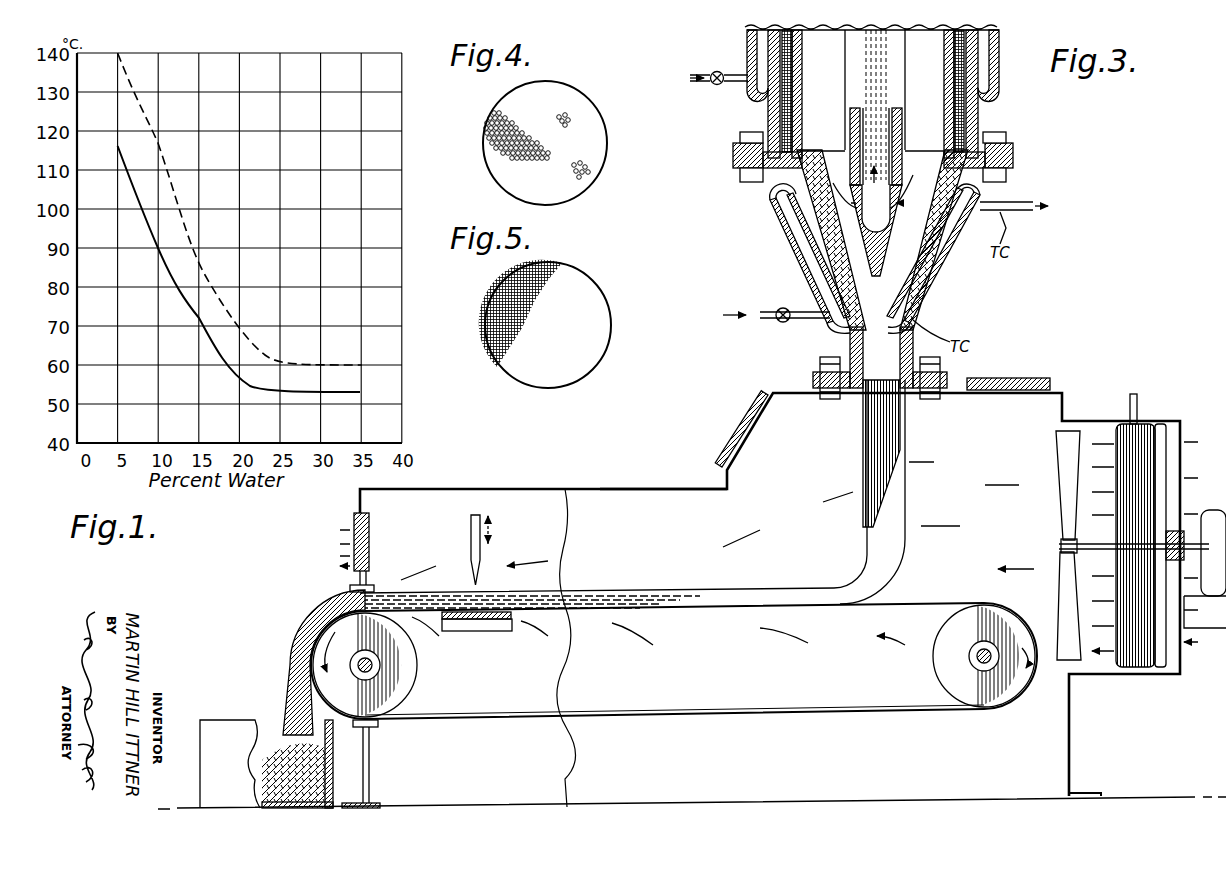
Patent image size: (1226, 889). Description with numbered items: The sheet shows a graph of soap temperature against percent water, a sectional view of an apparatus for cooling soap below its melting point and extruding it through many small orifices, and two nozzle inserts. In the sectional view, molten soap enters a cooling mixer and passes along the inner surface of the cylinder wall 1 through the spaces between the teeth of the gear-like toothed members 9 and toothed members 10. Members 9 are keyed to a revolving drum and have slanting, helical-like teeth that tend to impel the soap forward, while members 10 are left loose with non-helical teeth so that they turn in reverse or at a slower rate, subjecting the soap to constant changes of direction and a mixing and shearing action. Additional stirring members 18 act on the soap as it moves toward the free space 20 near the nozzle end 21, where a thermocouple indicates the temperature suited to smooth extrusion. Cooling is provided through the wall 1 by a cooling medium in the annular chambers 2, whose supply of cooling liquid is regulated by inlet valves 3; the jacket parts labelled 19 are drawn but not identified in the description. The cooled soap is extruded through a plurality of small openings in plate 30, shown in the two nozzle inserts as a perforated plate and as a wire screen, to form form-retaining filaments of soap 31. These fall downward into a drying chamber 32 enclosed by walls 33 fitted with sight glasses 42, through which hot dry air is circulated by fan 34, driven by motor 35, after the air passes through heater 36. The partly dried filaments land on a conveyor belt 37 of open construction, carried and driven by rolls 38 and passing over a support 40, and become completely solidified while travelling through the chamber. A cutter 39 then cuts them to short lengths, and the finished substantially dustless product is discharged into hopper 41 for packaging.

In FIG. 3, the cylinder wall 1 is at (768, 112).
In FIG. 3, the annular chambers 2 is at (762, 88).
In FIG. 3, the inlet valves 3 is at (717, 71).
In FIG. 3, the toothed members 9 is at (792, 98).
In FIG. 3, the toothed members 10 is at (947, 97).
In FIG. 3, the stirring members 18 is at (913, 263).
In FIG. 3, the heating jacket 19 is at (797, 235).
In FIG. 3, the free space 20 is at (870, 303).
In FIG. 3, the nozzle end 21 is at (877, 348).
In FIG. 4, the plate 30 is at (607, 146).
In FIG. 5, the plate 30 is at (611, 314).
In FIG. 3, the plate 30 is at (943, 367).
In FIG. 3, the filaments of soap 31 is at (901, 431).
In FIG. 3, the drying chamber 32 is at (668, 489).
In FIG. 3, the walls 33 is at (600, 477).
In FIG. 3, the fan 34 is at (1062, 456).
In FIG. 3, the motor 35 is at (1214, 514).
In FIG. 3, the heater 36 is at (1134, 439).
In FIG. 3, the conveyor belt 37 is at (919, 603).
In FIG. 3, the rolls 38 is at (937, 667).
In FIG. 3, the cutter 39 is at (471, 527).
In FIG. 3, the support 40 is at (483, 621).
In FIG. 3, the hopper 41 is at (223, 728).
In FIG. 3, the sight glasses 42 is at (752, 423).